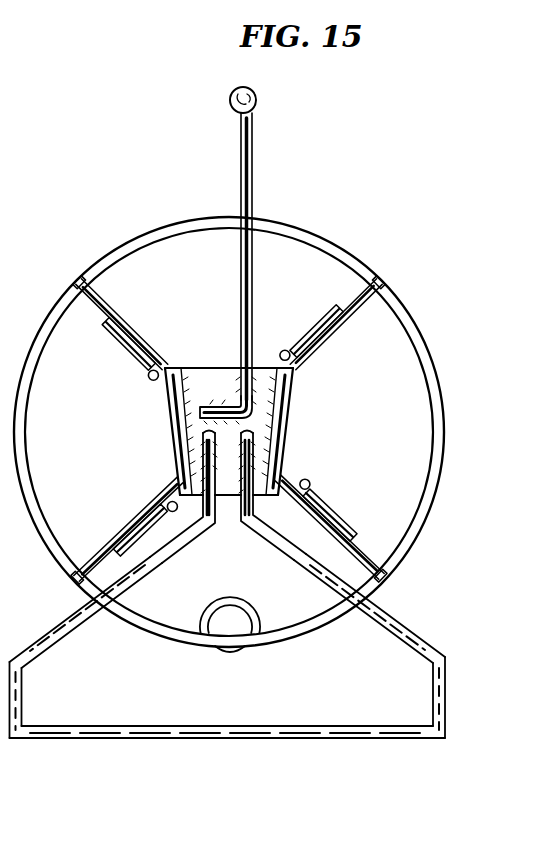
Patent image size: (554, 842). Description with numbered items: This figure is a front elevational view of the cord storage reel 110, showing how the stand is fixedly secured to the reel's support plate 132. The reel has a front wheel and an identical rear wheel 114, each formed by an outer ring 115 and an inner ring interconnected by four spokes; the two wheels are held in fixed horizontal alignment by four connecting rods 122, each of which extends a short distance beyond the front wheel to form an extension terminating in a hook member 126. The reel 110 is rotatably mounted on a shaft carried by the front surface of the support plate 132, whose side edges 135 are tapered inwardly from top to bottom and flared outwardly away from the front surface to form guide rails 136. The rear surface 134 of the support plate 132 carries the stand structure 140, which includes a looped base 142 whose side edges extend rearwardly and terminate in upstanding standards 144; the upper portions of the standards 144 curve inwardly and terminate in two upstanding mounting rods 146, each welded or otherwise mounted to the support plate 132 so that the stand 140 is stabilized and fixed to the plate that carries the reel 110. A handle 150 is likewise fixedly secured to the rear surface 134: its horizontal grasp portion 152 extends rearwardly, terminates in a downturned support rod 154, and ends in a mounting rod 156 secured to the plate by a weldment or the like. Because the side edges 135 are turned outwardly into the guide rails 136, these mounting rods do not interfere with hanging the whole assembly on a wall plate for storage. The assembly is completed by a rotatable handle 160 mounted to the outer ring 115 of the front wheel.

The cord storage reel 110 is at (380, 196).
The rear wheel 114 is at (402, 292).
The outer ring 115 is at (333, 244).
The connecting rods 122 is at (147, 375).
The hook member 126 is at (108, 339).
The support plate 132 is at (190, 360).
The rear surface 134 is at (236, 338).
The side edges 135 is at (165, 425).
The guide rails 136 is at (170, 397).
The stand structure 140 is at (447, 590).
The looped base 142 is at (228, 727).
The upstanding standards 144 is at (14, 697).
The mounting rods 146 is at (201, 462).
The handle 150 is at (260, 152).
The horizontal grasp portion 152 is at (233, 108).
The downturned support rod 154 is at (240, 182).
The mounting rod 156 is at (226, 382).
The rotatable handle 160 is at (238, 597).